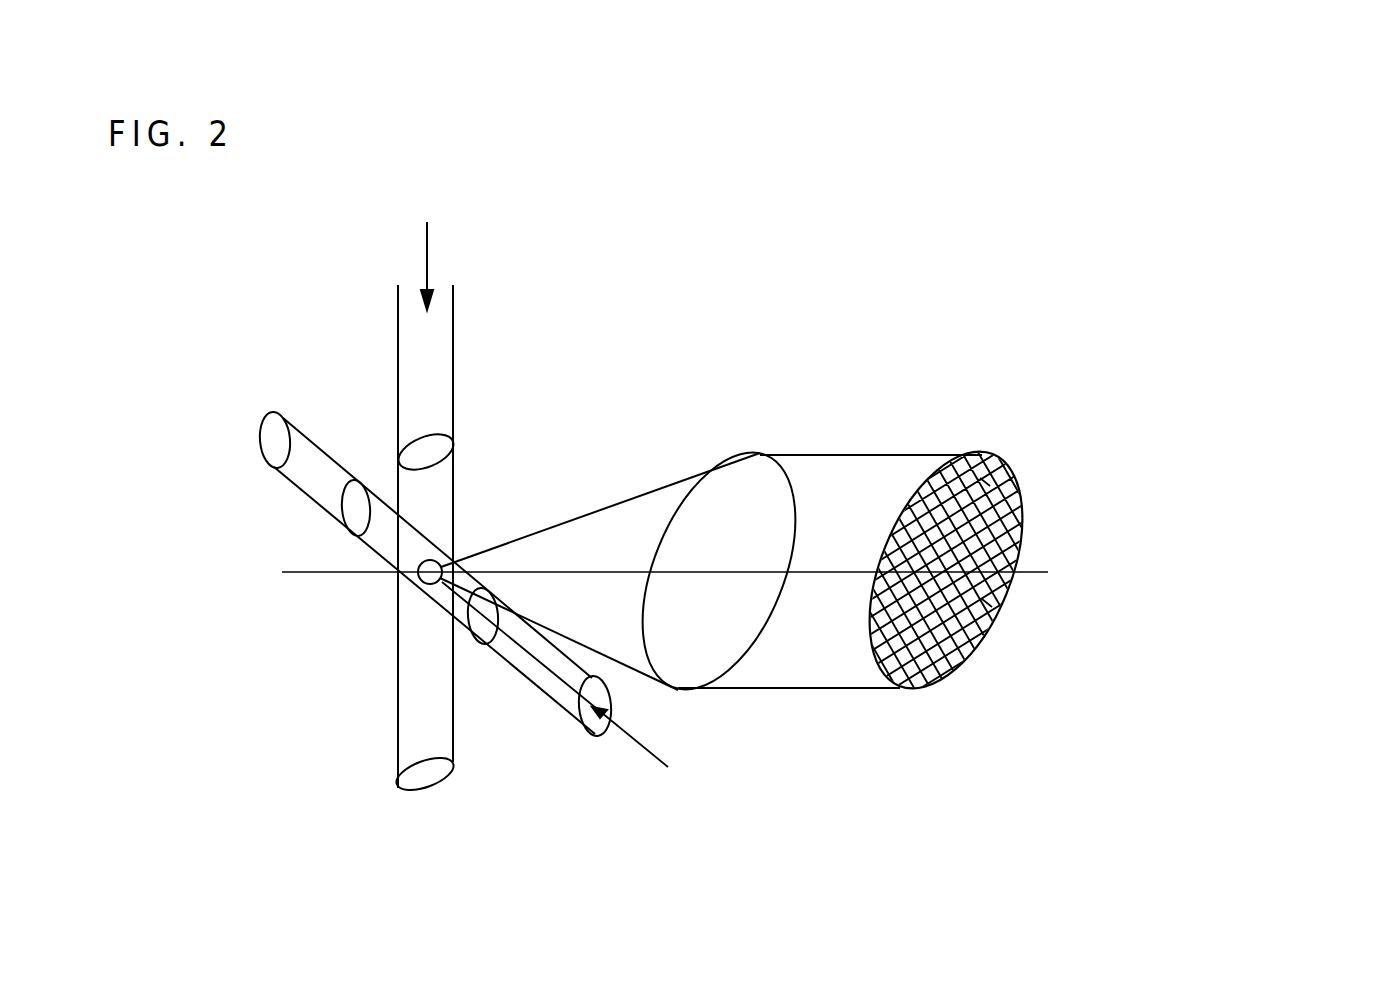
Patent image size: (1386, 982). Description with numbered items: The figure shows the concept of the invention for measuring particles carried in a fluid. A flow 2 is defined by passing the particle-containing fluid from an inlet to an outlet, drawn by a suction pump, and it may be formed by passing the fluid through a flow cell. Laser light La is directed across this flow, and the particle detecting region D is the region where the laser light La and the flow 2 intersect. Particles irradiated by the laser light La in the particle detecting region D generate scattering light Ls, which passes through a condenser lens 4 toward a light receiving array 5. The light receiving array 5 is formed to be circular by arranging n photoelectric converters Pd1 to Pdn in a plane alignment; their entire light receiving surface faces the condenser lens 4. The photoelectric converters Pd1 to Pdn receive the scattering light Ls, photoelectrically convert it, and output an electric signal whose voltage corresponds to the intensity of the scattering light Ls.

The flow 2 is at (434, 345).
The condenser lens 4 is at (762, 452).
The light receiving array 5 is at (997, 452).
The particle detecting region D is at (410, 583).
The scattering light Ls is at (490, 545).
The laser light La is at (562, 692).
The photoelectric converter Pdn is at (985, 482).
The photoelectric converter Pd1 is at (987, 603).